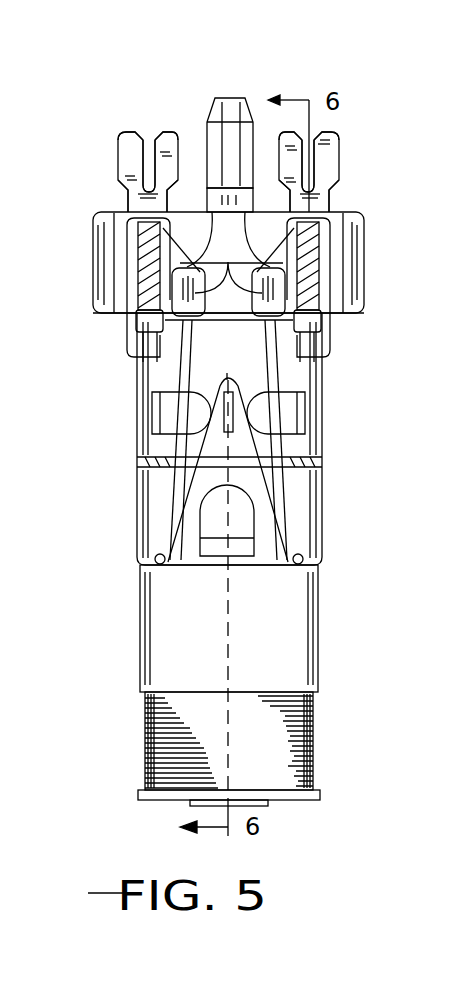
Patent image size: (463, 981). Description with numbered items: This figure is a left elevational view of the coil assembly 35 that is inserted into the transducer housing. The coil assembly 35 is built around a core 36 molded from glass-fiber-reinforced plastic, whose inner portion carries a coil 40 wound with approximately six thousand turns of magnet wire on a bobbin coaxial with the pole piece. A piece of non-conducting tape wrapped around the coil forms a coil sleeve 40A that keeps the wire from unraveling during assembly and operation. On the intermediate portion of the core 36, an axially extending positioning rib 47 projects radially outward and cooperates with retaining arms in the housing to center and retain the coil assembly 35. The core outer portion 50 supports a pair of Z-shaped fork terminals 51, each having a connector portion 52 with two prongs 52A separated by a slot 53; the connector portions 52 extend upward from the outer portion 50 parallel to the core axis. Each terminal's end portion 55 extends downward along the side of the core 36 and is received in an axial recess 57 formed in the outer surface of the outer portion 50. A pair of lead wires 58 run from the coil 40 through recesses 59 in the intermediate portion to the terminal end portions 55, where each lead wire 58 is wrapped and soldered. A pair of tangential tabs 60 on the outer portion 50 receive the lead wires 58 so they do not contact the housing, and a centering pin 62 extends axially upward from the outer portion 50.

The coil assembly 35 is at (346, 453).
The core 36 is at (308, 442).
The coil 40 is at (302, 722).
The coil sleeve 40A is at (293, 593).
The positioning rib 47 is at (227, 373).
The core outer portion 50 is at (366, 256).
The fork terminal 51 is at (127, 193).
The connector portion 52 is at (127, 152).
The prong 52A is at (135, 140).
The slot 53 is at (148, 140).
The end portion 55 is at (145, 287).
The axial recess 57 is at (148, 343).
The lead wire 58 is at (262, 362).
The recess 59 is at (192, 487).
The tangential tab 60 is at (228, 252).
The centering pin 62 is at (233, 98).